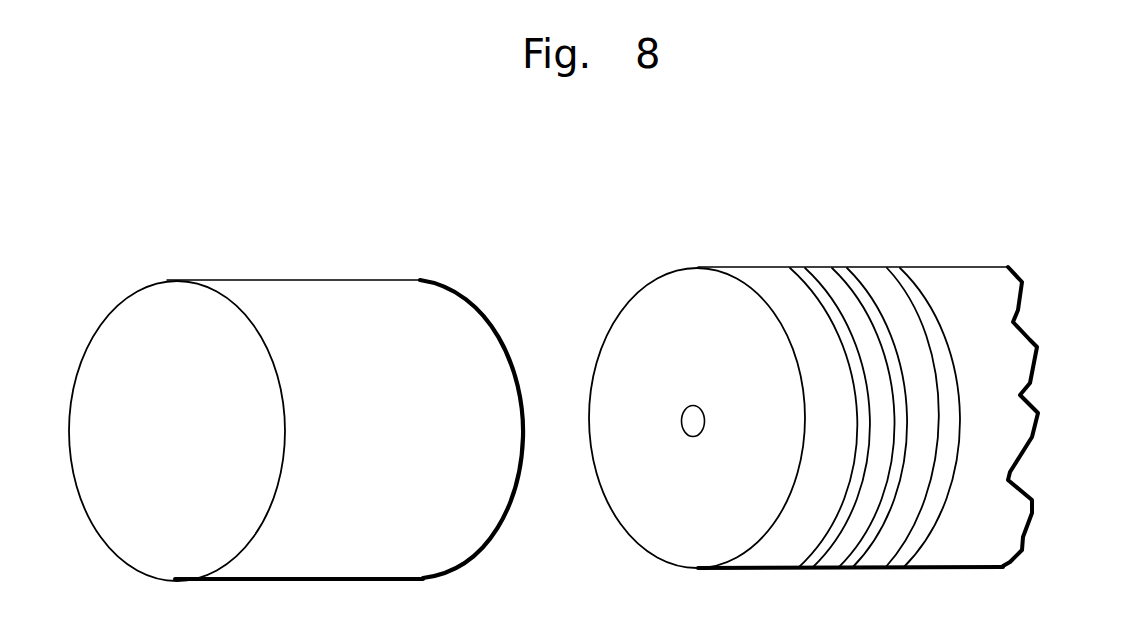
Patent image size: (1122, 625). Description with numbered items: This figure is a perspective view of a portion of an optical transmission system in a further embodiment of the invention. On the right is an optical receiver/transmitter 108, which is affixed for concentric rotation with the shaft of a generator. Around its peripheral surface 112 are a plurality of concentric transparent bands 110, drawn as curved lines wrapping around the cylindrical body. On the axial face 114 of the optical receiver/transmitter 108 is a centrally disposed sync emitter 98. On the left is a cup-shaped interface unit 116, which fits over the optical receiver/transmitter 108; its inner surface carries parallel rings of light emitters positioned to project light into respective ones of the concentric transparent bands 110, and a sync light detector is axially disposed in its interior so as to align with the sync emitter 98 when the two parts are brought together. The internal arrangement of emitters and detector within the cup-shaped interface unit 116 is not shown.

The sync emitter 98 is at (693, 423).
The optical receiver/transmitter 108 is at (985, 298).
The concentric transparent bands 110 is at (910, 293).
The peripheral surface 112 is at (870, 277).
The axial face 114 is at (687, 335).
The cup-shaped interface unit 116 is at (335, 312).